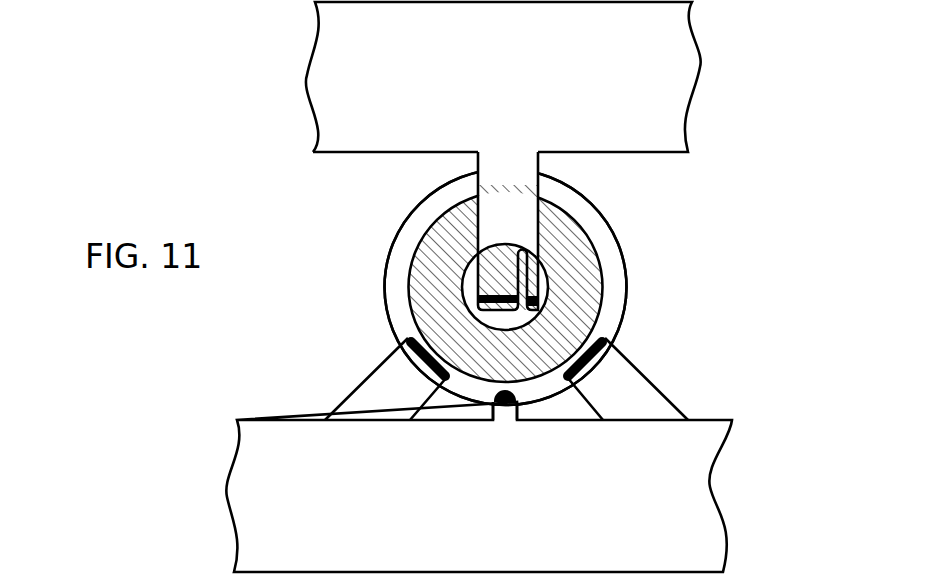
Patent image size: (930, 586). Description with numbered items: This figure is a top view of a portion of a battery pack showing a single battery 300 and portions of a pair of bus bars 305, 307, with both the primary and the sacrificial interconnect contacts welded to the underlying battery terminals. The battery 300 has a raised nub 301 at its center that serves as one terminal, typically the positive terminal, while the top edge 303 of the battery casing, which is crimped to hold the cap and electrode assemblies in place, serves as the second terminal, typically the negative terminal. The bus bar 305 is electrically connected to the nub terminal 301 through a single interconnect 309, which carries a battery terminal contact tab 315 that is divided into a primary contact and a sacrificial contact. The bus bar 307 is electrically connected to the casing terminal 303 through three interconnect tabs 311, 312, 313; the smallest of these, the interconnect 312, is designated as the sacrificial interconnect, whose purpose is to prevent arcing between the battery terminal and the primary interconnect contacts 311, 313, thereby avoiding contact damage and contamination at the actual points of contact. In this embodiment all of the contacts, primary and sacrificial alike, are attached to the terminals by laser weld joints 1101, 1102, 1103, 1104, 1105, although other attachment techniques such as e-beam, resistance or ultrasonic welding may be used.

The battery 300 is at (634, 285).
The raised nub 301 is at (505, 322).
The top edge 303 is at (412, 232).
The bus bar 305 is at (528, 57).
The bus bar 307 is at (528, 544).
The interconnect 309 is at (523, 210).
The interconnect tab 311 is at (415, 407).
The sacrificial interconnect 312 is at (507, 405).
The interconnect tab 313 is at (643, 408).
The battery terminal contact tab 315 is at (477, 293).
The laser weld joint 1101 is at (495, 308).
The laser weld joint 1102 is at (540, 306).
The laser weld joint 1103 is at (420, 367).
The laser weld joint 1104 is at (495, 403).
The laser weld joint 1105 is at (588, 368).